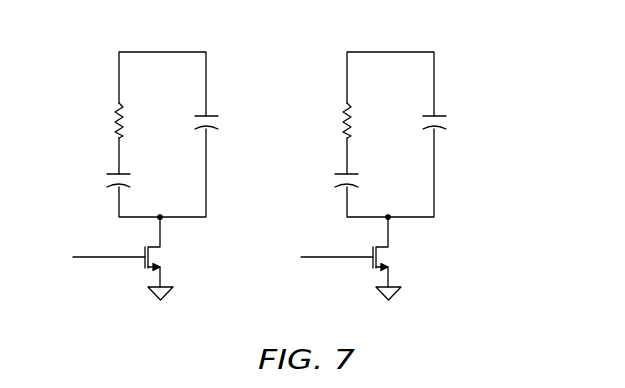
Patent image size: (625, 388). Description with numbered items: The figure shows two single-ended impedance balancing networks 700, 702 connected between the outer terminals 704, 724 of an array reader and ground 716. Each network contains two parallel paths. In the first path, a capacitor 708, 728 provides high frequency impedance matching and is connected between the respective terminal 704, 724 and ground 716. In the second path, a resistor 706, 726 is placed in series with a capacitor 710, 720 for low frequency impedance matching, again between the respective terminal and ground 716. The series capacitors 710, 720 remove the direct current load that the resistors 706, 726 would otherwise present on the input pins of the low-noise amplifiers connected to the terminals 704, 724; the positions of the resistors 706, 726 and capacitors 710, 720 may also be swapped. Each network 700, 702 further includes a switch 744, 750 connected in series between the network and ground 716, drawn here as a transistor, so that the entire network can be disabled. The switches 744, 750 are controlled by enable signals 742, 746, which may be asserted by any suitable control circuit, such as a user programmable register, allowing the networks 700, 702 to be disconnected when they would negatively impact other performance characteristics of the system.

The impedance balancing network 700 is at (236, 40).
The impedance balancing network 702 is at (397, 155).
The terminal HRPA 704 is at (119, 53).
The resistor 706 is at (118, 107).
The capacitor 708 is at (208, 113).
The capacitor 710 is at (115, 173).
The ground 716 is at (154, 297).
The capacitor 720 is at (330, 160).
The terminal HRNC 724 is at (376, 114).
The resistor 726 is at (326, 106).
The capacitor 728 is at (450, 102).
The enable signal 742 is at (88, 258).
The switch 744 is at (143, 265).
The enable signal 746 is at (321, 267).
The switch 750 is at (357, 260).